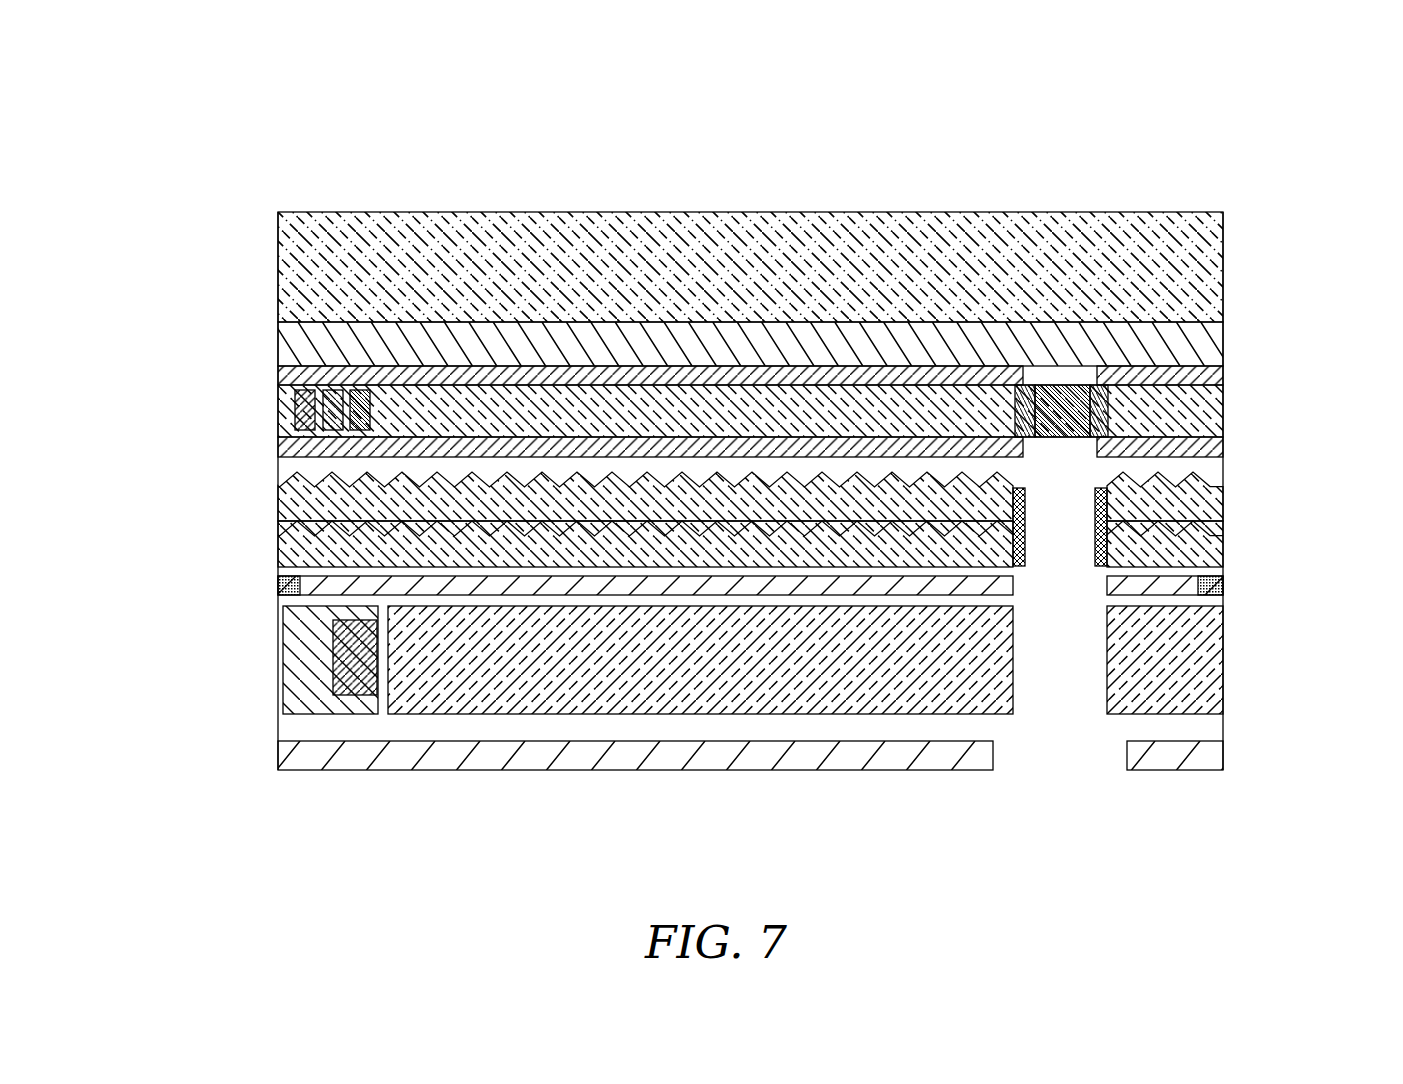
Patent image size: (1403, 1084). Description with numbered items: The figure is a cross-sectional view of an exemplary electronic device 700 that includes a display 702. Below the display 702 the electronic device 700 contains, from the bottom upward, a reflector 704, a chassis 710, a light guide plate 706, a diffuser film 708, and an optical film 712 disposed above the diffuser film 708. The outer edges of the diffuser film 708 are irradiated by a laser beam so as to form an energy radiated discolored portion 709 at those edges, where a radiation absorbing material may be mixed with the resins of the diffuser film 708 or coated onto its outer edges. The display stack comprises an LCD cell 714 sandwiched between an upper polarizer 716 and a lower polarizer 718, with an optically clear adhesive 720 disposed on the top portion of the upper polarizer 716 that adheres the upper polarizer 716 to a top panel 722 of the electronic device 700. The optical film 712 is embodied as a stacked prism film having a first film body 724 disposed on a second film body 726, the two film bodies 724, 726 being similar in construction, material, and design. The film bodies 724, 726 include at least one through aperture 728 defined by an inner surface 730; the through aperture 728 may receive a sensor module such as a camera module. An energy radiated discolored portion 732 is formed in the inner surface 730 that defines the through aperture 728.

The electronic device 700 is at (1288, 97).
The display 702 is at (1235, 343).
The reflector 704 is at (912, 755).
The light guide plate 706 is at (687, 698).
The diffuser film 708 is at (300, 577).
The energy radiated discolored portion 709 is at (290, 587).
The chassis 710 is at (315, 655).
The optical film 712 is at (268, 524).
The LCD cell 714 is at (287, 409).
The upper polarizer 716 is at (287, 374).
The lower polarizer 718 is at (287, 446).
The optically clear adhesive 720 is at (287, 342).
The top panel 722 is at (287, 286).
The first film body 724 is at (280, 488).
The second film body 726 is at (282, 545).
The through aperture 728 is at (1072, 546).
The inner surface 730 is at (1025, 529).
The energy radiated discolored portion 732 is at (1107, 502).